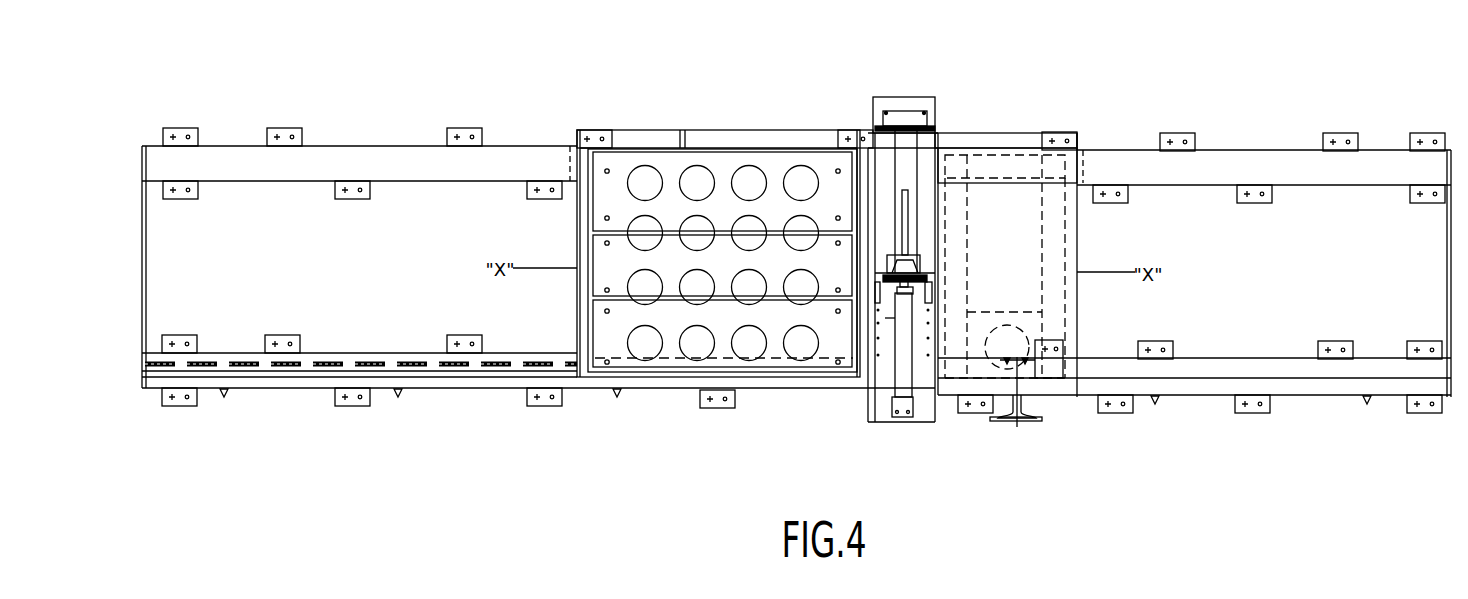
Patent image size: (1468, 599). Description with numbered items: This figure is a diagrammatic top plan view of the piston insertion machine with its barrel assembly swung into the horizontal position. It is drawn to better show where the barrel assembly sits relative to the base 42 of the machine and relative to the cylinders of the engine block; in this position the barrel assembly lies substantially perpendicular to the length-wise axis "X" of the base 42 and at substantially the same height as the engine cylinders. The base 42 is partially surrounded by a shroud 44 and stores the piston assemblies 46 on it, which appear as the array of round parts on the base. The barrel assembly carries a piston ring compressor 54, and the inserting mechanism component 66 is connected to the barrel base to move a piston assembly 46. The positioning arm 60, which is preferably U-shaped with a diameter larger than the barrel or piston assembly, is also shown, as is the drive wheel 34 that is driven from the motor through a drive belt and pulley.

The drive wheel 34 is at (1017, 427).
The base 42 is at (618, 377).
The shroud 44 is at (1042, 224).
The piston assemblies 46 is at (797, 348).
The piston ring compressor 54 is at (912, 118).
The positioning arm 60 is at (905, 97).
The inserting mechanism component 66 is at (903, 355).